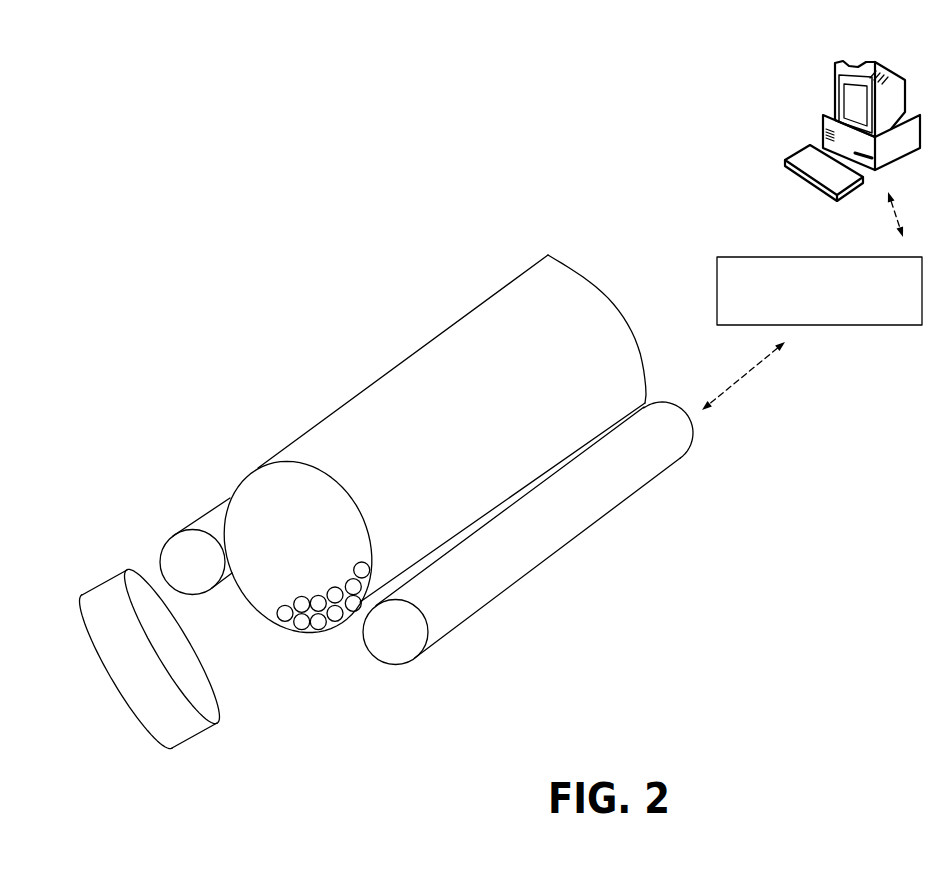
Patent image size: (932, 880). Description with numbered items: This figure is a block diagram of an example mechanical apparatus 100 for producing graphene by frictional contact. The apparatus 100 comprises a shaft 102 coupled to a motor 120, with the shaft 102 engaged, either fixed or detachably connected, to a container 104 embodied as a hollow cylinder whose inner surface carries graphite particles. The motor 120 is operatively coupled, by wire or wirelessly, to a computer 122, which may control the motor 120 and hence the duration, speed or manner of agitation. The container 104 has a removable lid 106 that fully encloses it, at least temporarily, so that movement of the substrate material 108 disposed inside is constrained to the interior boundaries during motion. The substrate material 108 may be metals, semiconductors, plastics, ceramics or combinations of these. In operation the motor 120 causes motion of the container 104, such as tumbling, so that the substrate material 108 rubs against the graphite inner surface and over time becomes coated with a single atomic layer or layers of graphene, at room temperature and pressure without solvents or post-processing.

The apparatus 100 is at (192, 146).
The shaft 102 is at (558, 553).
The container 104 is at (259, 467).
The removable lid 106 is at (125, 570).
The substrate material 108 is at (317, 630).
The motor 120 is at (803, 301).
The computer 122 is at (832, 67).